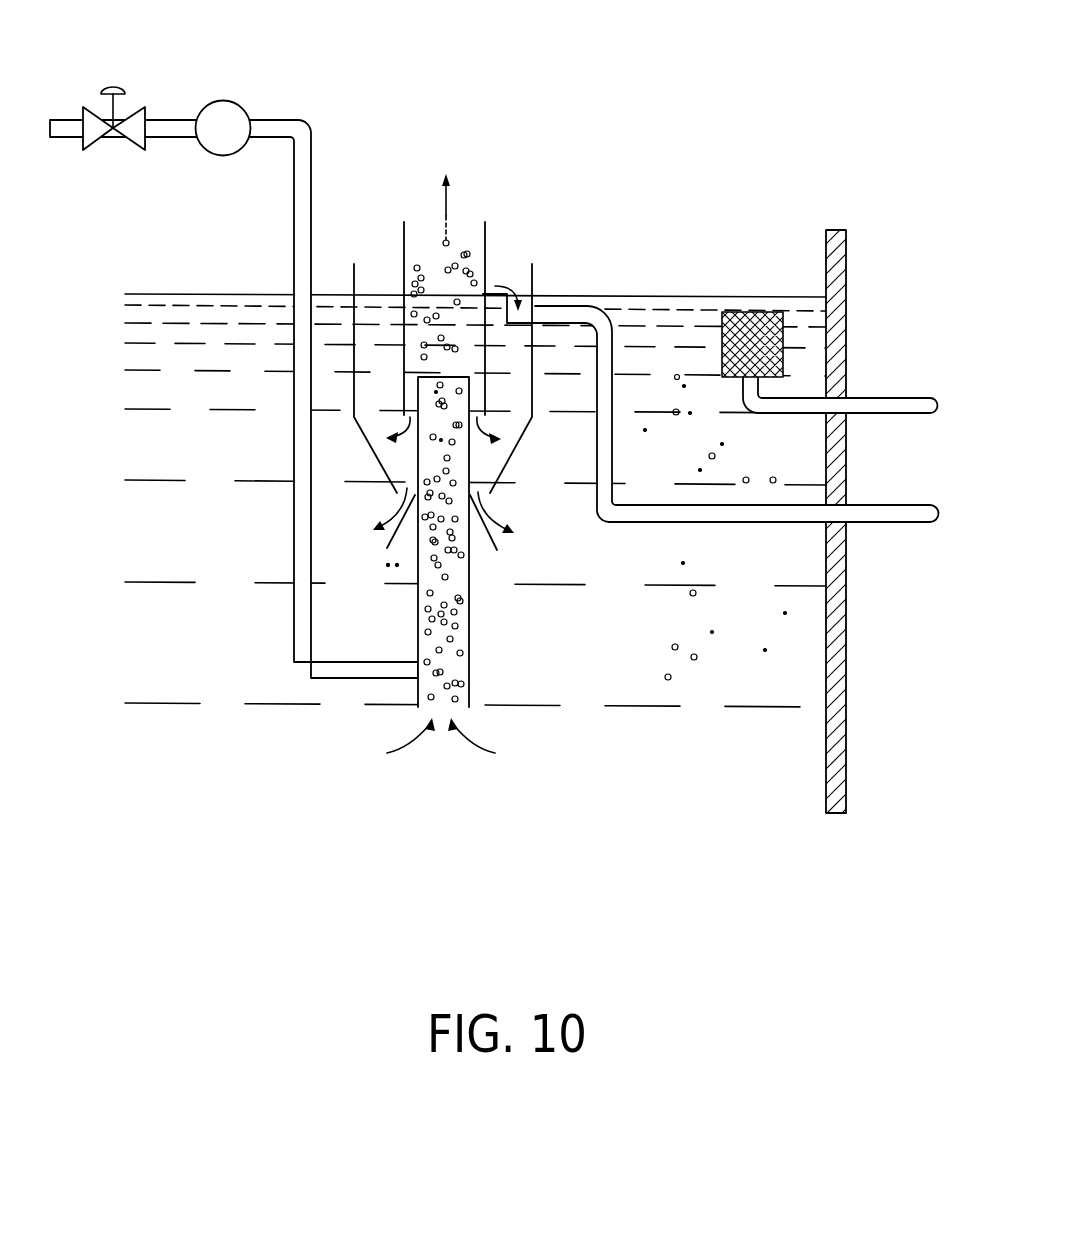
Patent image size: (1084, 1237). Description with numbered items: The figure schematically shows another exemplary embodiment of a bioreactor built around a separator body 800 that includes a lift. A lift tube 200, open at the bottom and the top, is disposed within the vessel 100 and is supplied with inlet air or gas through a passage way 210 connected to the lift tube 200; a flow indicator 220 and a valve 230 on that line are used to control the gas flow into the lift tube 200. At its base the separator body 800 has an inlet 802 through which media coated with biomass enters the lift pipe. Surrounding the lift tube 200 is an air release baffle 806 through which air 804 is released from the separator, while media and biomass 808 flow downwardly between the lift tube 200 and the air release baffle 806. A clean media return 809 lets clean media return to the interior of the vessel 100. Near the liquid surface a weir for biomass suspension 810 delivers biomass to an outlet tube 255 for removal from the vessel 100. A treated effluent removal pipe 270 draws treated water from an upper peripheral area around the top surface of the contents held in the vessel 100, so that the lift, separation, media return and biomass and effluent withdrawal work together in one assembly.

The vessel 100 is at (834, 630).
The lift tube 200 is at (469, 632).
The gas inlet line 210 is at (312, 182).
The flow indicator 220 is at (228, 107).
The valve 230 is at (110, 86).
The outlet tube 255 is at (890, 515).
The treated effluent removal pipe 270 is at (890, 408).
The separator body 800 is at (438, 516).
The inlet 802 is at (441, 761).
The air 804 is at (447, 200).
The air release baffle 806 is at (485, 240).
The media and biomass 808 is at (477, 425).
The clean media return 809 is at (390, 508).
The weir for biomass suspension 810 is at (527, 300).